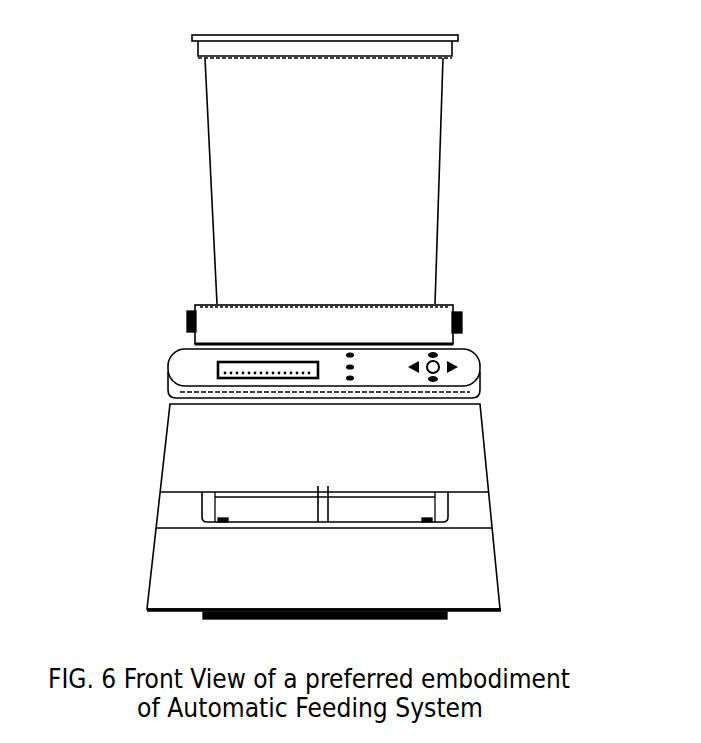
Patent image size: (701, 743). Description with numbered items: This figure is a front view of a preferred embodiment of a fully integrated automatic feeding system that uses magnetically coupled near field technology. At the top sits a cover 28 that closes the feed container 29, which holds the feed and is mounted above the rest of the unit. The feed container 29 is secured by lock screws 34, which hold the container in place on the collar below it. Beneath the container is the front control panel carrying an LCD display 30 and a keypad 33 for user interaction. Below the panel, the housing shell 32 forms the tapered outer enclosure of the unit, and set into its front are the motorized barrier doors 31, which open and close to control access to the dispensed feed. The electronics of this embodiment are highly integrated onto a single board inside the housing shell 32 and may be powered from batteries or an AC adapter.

The cover 28 is at (212, 50).
The feed container 29 is at (243, 200).
The lock screws 34 is at (463, 322).
The LCD display 30 is at (217, 365).
The keypad 33 is at (458, 367).
The motorized barrier doors 31 is at (248, 508).
The housing shell 32 is at (478, 577).